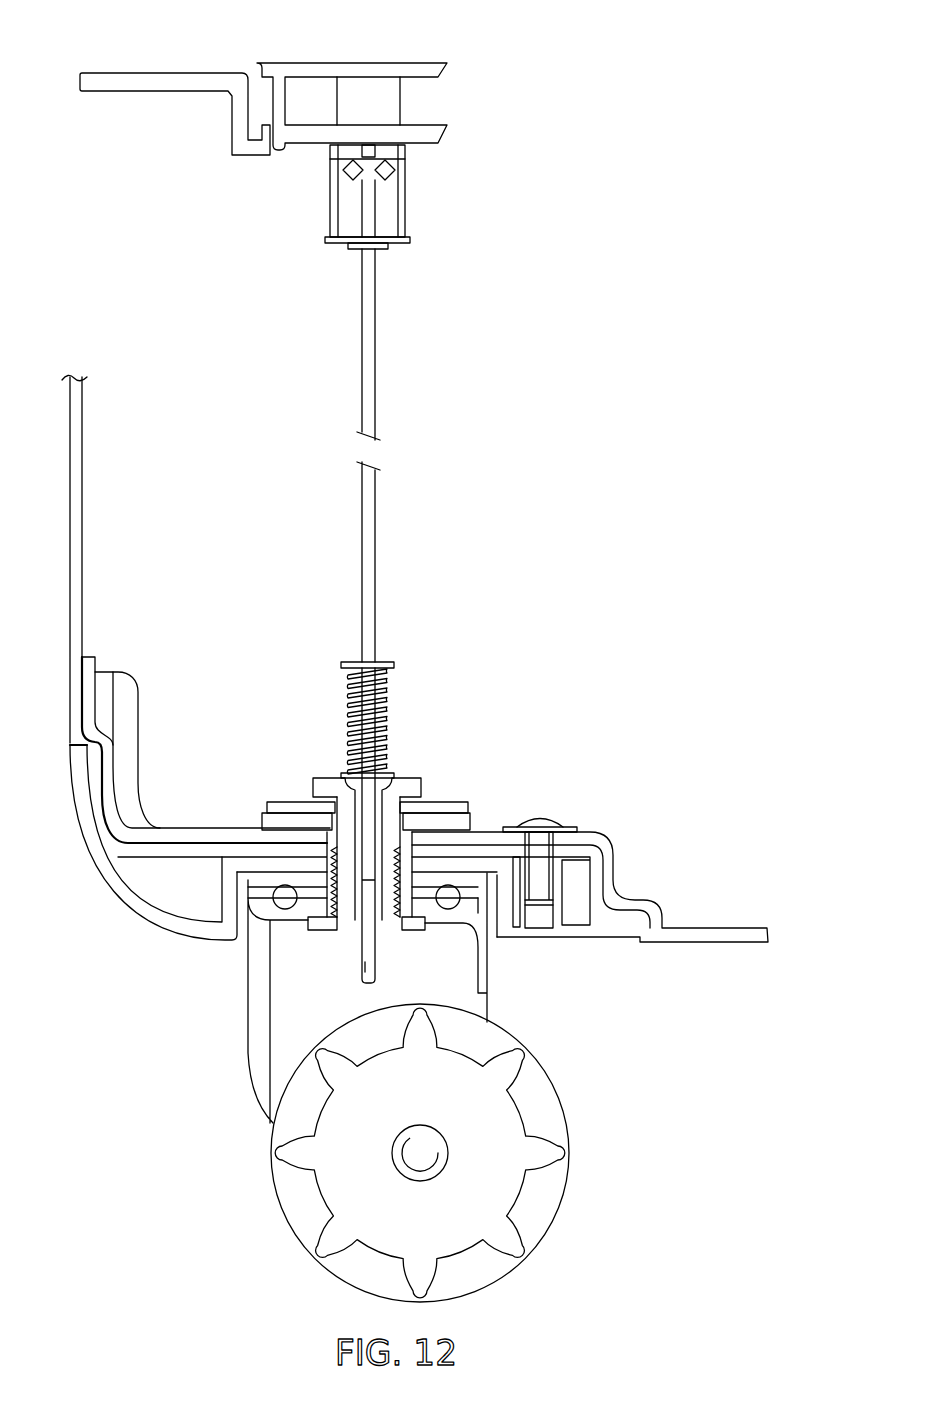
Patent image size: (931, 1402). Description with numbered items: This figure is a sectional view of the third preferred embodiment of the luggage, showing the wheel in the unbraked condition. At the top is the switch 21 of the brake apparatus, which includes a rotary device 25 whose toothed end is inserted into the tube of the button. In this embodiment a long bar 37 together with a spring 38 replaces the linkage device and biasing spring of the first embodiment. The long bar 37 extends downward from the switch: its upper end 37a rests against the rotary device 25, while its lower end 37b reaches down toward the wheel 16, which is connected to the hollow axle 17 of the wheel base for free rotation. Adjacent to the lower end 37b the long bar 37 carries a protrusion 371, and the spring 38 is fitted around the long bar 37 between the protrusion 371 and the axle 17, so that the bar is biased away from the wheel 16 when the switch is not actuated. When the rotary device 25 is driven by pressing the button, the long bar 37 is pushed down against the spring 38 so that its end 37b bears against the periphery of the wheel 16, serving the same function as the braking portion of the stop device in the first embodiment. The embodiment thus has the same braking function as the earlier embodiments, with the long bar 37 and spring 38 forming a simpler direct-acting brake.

The switch 21 is at (457, 93).
The rotary device 25 is at (397, 213).
The end of the long bar 37a is at (383, 247).
The long bar 37 is at (372, 360).
The protrusion 371 is at (390, 665).
The spring 38 is at (385, 702).
The hollow axle 17 is at (323, 787).
The end of the long bar 37b is at (365, 963).
The wheel 16 is at (570, 1122).